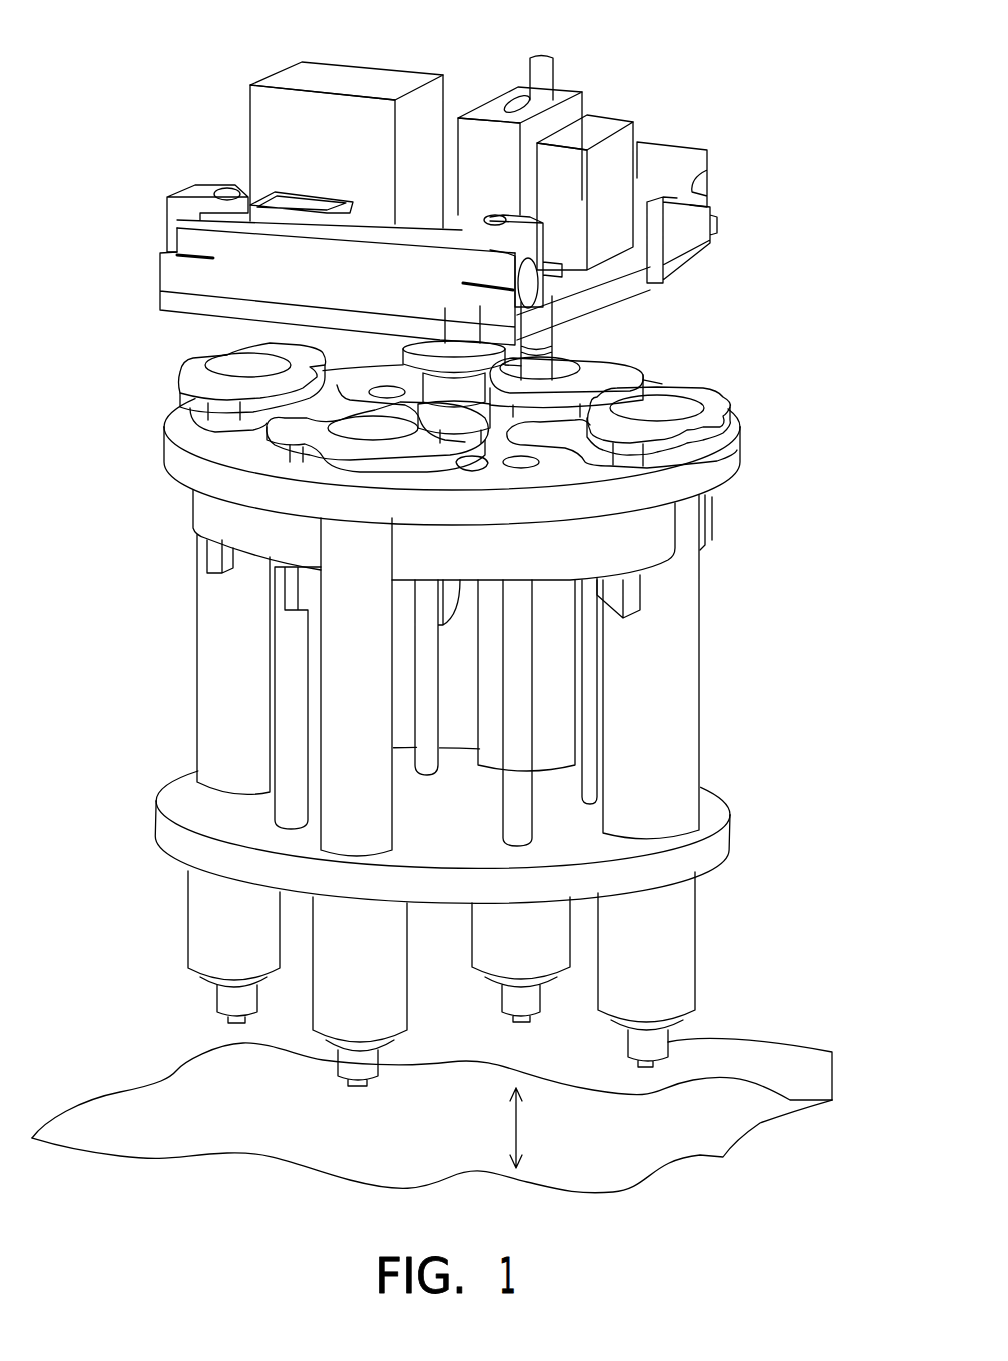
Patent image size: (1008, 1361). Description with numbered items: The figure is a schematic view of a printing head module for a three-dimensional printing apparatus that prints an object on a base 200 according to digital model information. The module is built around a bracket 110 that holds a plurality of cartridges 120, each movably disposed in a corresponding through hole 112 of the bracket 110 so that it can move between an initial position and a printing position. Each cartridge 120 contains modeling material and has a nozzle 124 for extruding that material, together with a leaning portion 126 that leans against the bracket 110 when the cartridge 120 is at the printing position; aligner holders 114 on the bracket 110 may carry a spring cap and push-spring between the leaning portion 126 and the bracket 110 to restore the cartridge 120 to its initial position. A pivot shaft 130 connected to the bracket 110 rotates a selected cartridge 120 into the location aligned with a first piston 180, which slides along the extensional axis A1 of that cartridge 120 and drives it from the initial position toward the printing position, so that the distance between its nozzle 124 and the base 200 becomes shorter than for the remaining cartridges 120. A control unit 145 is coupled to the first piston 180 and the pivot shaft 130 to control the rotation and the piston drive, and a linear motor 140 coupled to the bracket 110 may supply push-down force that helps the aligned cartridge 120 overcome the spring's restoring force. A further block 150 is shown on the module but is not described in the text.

The bracket 110 is at (763, 455).
The through holes 112 is at (470, 485).
The aligner holders 114 is at (430, 613).
The cartridges 120 is at (733, 664).
The nozzle 124 is at (652, 1045).
The leaning portion 126 is at (708, 397).
The pivot shaft 130 is at (600, 378).
The linear motor 140 is at (603, 128).
The control unit 145 is at (488, 108).
The drive block 150 is at (356, 78).
The first piston 180 is at (537, 367).
The base 200 is at (725, 1152).
The extensional axis A1 is at (535, 1128).